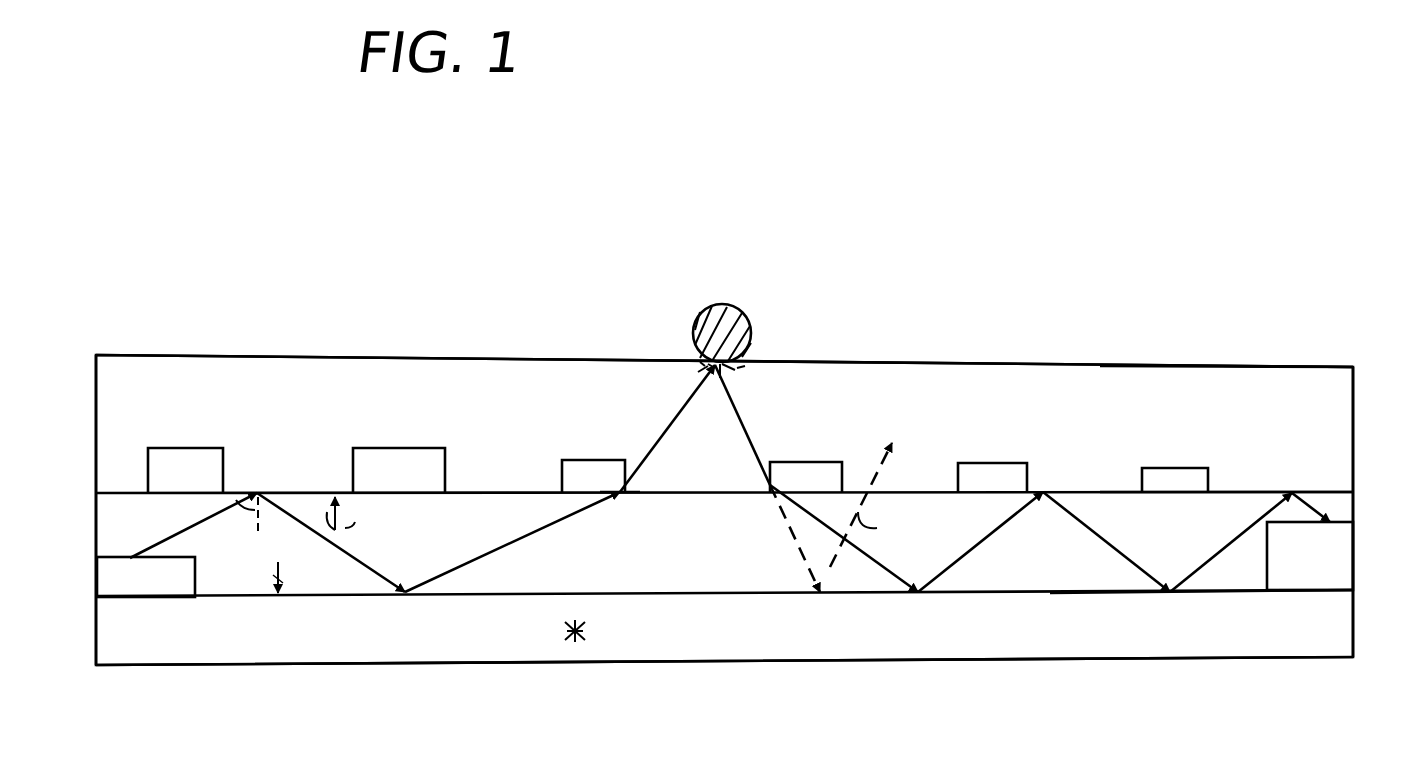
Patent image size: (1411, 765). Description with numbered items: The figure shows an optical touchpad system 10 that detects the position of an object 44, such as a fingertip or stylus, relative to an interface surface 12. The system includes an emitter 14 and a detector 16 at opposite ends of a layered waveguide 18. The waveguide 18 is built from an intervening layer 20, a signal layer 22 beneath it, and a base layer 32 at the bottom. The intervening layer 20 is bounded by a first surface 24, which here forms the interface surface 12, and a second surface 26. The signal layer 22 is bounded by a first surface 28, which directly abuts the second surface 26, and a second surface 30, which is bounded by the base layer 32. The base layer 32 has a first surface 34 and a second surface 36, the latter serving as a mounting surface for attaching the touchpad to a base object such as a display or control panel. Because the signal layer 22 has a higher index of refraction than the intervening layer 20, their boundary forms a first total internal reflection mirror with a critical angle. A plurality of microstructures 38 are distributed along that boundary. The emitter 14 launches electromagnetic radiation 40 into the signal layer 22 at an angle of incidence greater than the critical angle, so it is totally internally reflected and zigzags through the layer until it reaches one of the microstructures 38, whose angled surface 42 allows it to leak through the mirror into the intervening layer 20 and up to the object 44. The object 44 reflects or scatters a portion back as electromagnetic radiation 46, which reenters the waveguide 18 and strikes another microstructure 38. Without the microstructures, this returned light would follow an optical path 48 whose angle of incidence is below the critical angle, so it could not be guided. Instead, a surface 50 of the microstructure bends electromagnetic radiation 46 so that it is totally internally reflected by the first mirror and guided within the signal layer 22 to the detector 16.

The optical touchpad system 10 is at (895, 158).
The interface surface 12 is at (263, 355).
The emitter 14 is at (107, 557).
The detector 16 is at (1340, 537).
The waveguide 18 is at (1133, 352).
The intervening layer 20 is at (540, 429).
The signal layer 22 is at (625, 561).
The first surface 24 is at (1128, 369).
The second surface 26 is at (1087, 491).
The first surface 28 is at (1115, 494).
The second surface 30 is at (1050, 594).
The base layer 32 is at (1016, 641).
The first surface 34 is at (1096, 596).
The second surface 36 is at (1130, 662).
The microstructures 38 is at (192, 460).
The electromagnetic radiation 40 is at (383, 572).
The surface 42 is at (626, 491).
The object 44 is at (735, 309).
The electromagnetic radiation 46 is at (678, 413).
The optical path 48 is at (798, 547).
The surface 50 is at (780, 456).